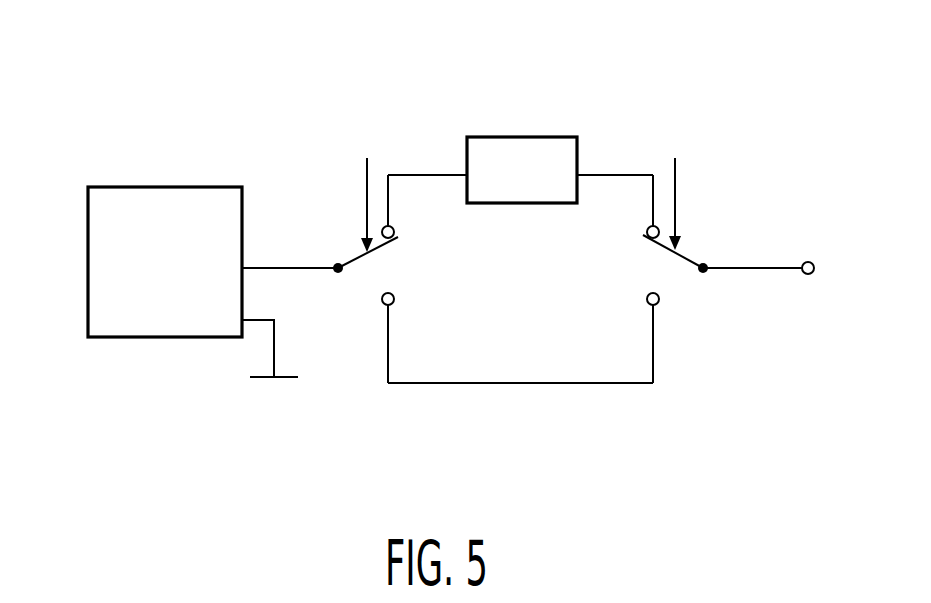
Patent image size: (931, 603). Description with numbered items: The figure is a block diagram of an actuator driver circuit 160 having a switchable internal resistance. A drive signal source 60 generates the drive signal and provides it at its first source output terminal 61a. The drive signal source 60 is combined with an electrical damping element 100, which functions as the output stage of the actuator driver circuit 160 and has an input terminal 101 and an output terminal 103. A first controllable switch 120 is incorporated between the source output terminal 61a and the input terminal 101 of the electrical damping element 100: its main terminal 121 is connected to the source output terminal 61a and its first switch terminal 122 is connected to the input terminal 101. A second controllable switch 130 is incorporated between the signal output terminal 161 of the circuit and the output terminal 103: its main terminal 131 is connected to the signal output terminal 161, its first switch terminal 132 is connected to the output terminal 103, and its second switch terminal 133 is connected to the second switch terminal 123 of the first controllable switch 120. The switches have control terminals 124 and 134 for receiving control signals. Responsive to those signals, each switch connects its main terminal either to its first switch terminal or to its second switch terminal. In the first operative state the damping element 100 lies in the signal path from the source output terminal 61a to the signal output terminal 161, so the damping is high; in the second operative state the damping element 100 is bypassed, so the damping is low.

The drive signal source 60 is at (153, 187).
The first source output terminal 61a is at (230, 280).
The actuator driver circuit 160 is at (254, 402).
The electrical damping element 100 is at (522, 137).
The input terminal 101 is at (465, 172).
The output terminal 103 is at (581, 172).
The first controllable switch 120 is at (378, 266).
The main terminal 121 is at (335, 264).
The first switch terminal 122 is at (396, 229).
The second switch terminal 123 is at (393, 304).
The control terminal 124 is at (364, 197).
The second controllable switch 130 is at (645, 260).
The main terminal 131 is at (705, 274).
The first switch terminal 132 is at (645, 233).
The second switch terminal 133 is at (648, 305).
The control terminal 134 is at (676, 182).
The signal output terminal 161 is at (809, 261).